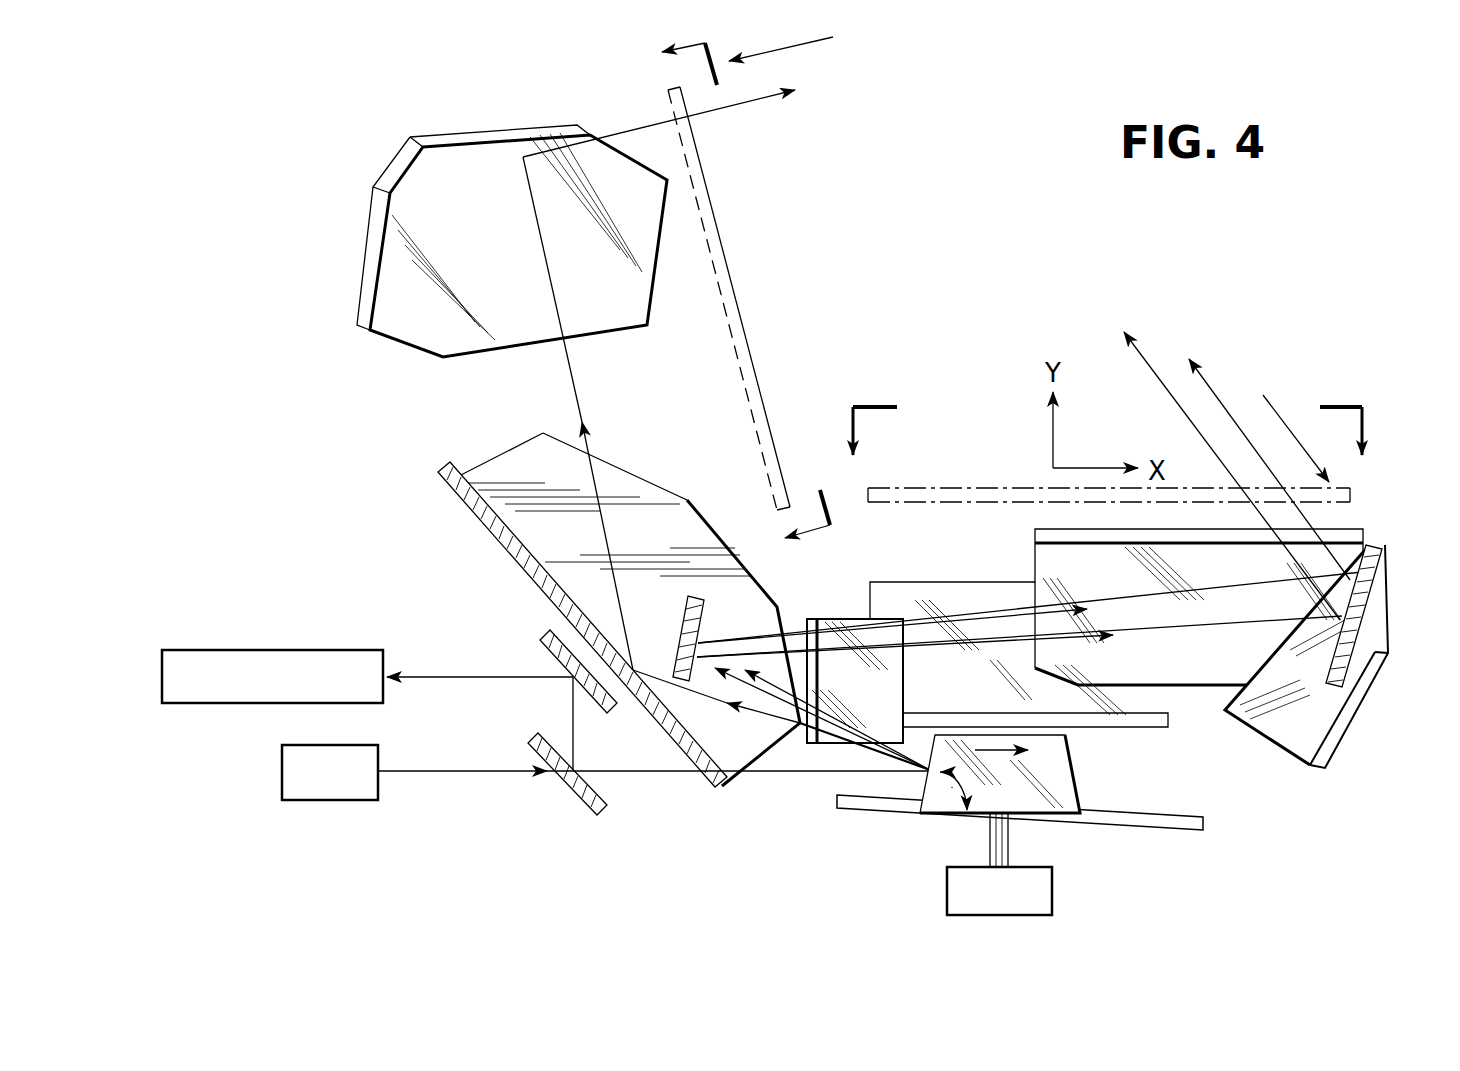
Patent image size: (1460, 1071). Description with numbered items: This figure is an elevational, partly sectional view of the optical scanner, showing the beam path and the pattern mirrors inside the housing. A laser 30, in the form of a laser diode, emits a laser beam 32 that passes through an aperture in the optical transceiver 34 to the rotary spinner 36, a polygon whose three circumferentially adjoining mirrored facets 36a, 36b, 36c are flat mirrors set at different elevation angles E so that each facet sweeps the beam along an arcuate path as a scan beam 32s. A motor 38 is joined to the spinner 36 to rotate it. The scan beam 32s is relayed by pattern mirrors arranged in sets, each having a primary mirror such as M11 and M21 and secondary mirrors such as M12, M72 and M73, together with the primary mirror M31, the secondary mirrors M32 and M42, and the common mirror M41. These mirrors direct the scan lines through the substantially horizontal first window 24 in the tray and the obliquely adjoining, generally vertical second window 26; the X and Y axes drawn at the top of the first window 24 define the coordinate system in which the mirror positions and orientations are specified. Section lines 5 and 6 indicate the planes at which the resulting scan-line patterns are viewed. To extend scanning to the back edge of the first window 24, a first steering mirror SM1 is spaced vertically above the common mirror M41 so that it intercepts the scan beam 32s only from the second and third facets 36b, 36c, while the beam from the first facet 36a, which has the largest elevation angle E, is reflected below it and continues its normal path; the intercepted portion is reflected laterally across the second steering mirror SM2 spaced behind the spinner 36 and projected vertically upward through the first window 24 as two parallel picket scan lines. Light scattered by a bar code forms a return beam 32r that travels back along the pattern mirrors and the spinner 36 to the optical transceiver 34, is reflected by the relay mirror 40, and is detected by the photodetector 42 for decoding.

The secondary pattern mirror M32 is at (460, 241).
The secondary pattern mirror M42 is at (410, 142).
The second window 26 is at (727, 267).
The section line 5- 5 is at (734, 298).
The section line 6- 6 is at (1107, 447).
The scan beam 32s is at (723, 112).
The return beam 32r is at (820, 40).
The first window 24 is at (951, 481).
The primary pattern mirror M31 is at (640, 477).
The common mirror M41 is at (490, 530).
The relay mirror 40 is at (543, 633).
The optical transceiver 34 is at (575, 808).
The first steering mirror SM1 is at (703, 597).
The laser beam 32 is at (637, 773).
The laser 30 is at (332, 800).
The photodetector 42 is at (277, 648).
The primary pattern mirror M21 is at (848, 619).
The primary pattern mirror M11 is at (947, 582).
The secondary pattern mirror M72 is at (1192, 668).
The secondary pattern mirror M73 is at (1313, 767).
The second steering mirror SM2 is at (1380, 545).
The secondary pattern mirror M12 is at (1150, 830).
The rotary spinner 36 is at (997, 797).
The first mirrored facet 36a is at (1020, 800).
The second mirrored facet 36b is at (960, 797).
The third mirrored facet 36c is at (997, 797).
The elevation angle E is at (952, 787).
The motor 38 is at (947, 892).